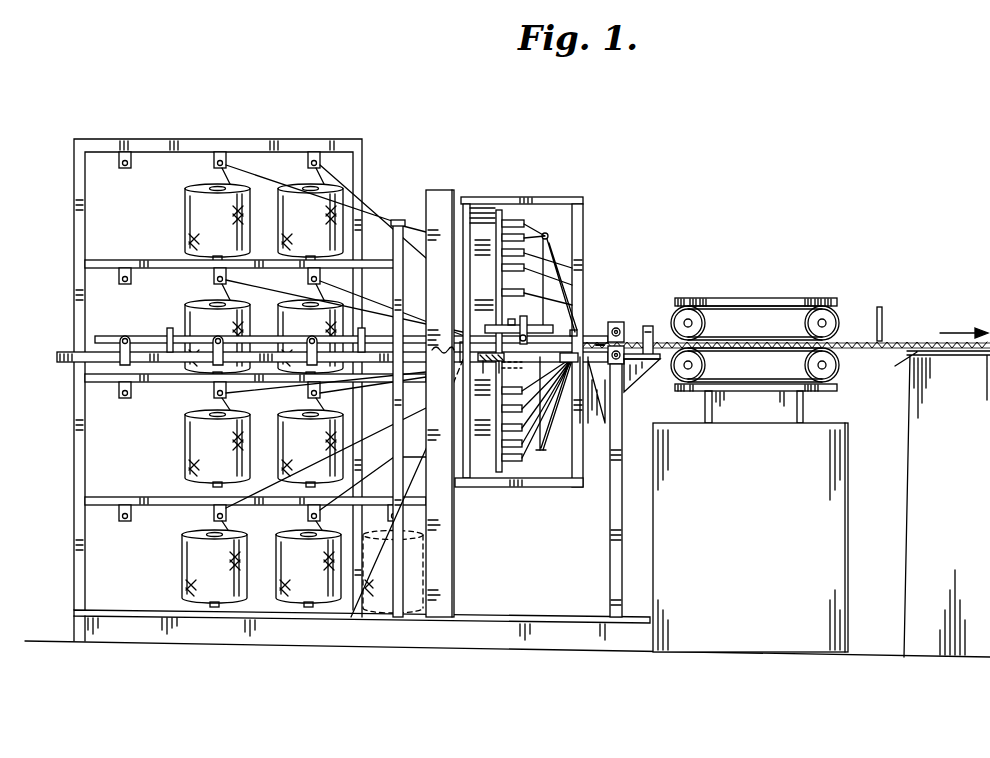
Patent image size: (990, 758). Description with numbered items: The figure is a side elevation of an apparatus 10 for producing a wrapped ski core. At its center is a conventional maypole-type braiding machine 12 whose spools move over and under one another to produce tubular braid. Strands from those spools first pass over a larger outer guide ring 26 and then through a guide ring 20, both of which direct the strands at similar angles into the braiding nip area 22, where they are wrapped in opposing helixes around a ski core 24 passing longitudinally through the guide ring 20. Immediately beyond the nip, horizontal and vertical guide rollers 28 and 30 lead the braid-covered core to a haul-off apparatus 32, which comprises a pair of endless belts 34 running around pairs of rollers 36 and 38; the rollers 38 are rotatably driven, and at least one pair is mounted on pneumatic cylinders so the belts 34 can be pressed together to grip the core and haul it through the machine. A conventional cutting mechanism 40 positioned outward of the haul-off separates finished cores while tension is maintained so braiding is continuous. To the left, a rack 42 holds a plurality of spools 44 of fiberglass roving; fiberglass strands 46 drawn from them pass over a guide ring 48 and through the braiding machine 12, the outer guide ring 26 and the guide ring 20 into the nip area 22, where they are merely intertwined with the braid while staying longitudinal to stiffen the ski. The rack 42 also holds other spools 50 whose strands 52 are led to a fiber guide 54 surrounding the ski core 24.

The apparatus 10 is at (630, 190).
The braiding machine 12 is at (486, 214).
The guide ring 20 is at (590, 330).
The braiding nip area 22 is at (606, 330).
The ski core 24 is at (136, 338).
The outer guide ring 26 is at (547, 233).
The horizontal guide roller 28 is at (598, 345).
The vertical guide roller 30 is at (652, 324).
The haul-off apparatus 32 is at (747, 332).
The endless belts 34 is at (772, 336).
The rollers 36 is at (700, 316).
The rollers 38 is at (825, 306).
The cutting mechanism 40 is at (886, 320).
The rack 42 is at (160, 140).
The spools 44 is at (226, 239).
The fiberglass strands 46 is at (261, 170).
The guide ring 48 is at (398, 221).
The spools 50 is at (318, 332).
The strands 52 is at (400, 482).
The fiber guide 54 is at (490, 318).